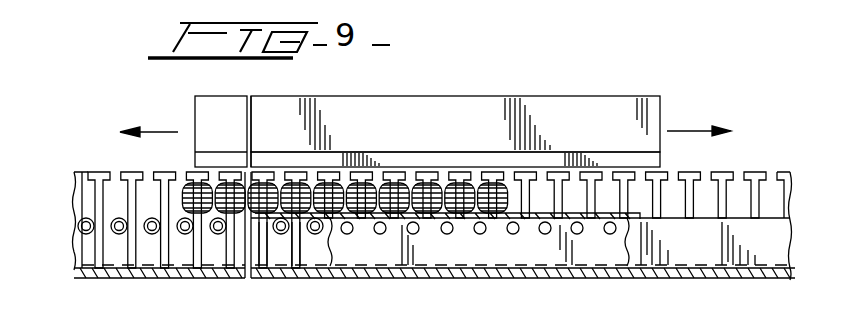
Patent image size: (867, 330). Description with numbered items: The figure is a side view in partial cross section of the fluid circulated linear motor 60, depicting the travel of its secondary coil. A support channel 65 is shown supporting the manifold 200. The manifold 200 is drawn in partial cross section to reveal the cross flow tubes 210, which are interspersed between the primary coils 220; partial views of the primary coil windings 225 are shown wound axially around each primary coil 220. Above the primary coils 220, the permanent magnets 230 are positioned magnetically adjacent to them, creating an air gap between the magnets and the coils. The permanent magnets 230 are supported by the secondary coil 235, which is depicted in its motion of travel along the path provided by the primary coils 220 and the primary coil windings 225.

The fluid circulated linear motor 60 is at (192, 89).
The support channel 65 is at (487, 277).
The manifold 200 is at (712, 247).
The cross flow tubes 210 is at (440, 230).
The primary coils 220 is at (297, 262).
The primary coil windings 225 is at (183, 180).
The permanent magnets 230 is at (402, 162).
The secondary coil 235 is at (483, 134).